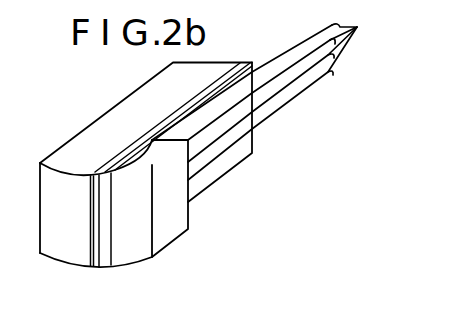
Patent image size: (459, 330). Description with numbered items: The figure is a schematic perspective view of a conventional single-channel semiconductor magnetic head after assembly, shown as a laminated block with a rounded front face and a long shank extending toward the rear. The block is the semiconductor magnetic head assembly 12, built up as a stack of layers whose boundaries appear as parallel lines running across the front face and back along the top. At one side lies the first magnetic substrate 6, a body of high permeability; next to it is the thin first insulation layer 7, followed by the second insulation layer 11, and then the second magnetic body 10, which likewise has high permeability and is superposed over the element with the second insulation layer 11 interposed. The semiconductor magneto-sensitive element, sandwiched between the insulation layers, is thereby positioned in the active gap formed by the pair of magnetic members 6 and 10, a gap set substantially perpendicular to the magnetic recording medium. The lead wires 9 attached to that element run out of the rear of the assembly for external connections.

The lead wires 9 is at (265, 98).
The second magnetic body 10 is at (137, 254).
The second insulation layer 11 is at (108, 255).
The first insulation layer 7 is at (96, 264).
The first magnetic substrate 6 is at (83, 257).
The semiconductor magnetic head assembly 12 is at (62, 247).